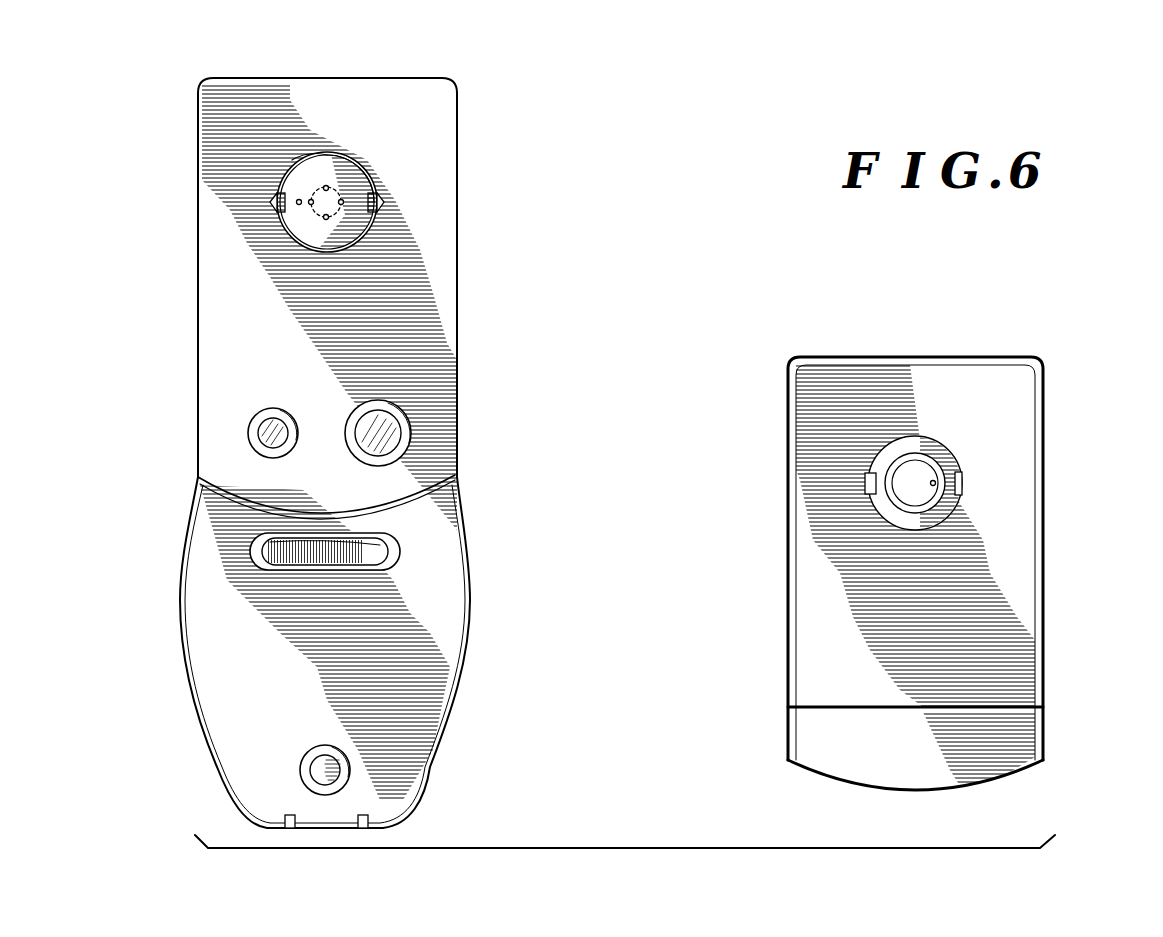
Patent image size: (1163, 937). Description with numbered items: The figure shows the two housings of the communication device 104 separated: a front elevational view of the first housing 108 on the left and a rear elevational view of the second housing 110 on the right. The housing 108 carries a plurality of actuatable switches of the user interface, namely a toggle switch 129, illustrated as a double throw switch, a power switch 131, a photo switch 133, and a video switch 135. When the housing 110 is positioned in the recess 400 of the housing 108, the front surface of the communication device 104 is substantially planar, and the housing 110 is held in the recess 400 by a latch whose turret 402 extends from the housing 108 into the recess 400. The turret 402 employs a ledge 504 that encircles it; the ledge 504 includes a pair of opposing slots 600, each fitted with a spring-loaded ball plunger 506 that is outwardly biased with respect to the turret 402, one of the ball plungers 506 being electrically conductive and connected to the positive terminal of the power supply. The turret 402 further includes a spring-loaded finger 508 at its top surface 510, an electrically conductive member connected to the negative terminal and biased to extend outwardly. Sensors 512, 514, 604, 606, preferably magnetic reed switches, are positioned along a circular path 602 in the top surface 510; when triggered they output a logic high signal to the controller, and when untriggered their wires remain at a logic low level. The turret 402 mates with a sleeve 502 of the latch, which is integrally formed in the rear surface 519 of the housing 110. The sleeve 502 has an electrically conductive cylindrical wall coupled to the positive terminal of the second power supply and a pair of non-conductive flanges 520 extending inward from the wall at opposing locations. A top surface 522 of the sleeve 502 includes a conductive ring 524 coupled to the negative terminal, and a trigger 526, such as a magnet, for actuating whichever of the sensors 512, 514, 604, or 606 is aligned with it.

The communication device 104 is at (620, 850).
The housing 108 is at (418, 78).
The housing 110 is at (956, 546).
The toggle switch 129 is at (370, 553).
The power switch 131 is at (317, 771).
The photo switch 133 is at (268, 430).
The video switch 135 is at (390, 442).
The recess 400 is at (342, 196).
The turret 402 is at (283, 149).
The sleeve 502 is at (914, 485).
The ledge 504 is at (365, 166).
The spring-loaded ball plunger 506 is at (275, 207).
The spring-loaded finger 508 is at (299, 199).
The top surface 510 is at (343, 163).
The sensor 512 is at (310, 205).
The sensor 514 is at (343, 203).
The rear surface 519 is at (1013, 553).
The flanges 520 is at (866, 480).
The top surface 522 is at (887, 513).
The conductive ring 524 is at (892, 465).
The trigger 526 is at (935, 482).
The slots 600 is at (280, 197).
The circular path 602 is at (340, 208).
The sensor 604 is at (326, 219).
The sensor 606 is at (326, 186).